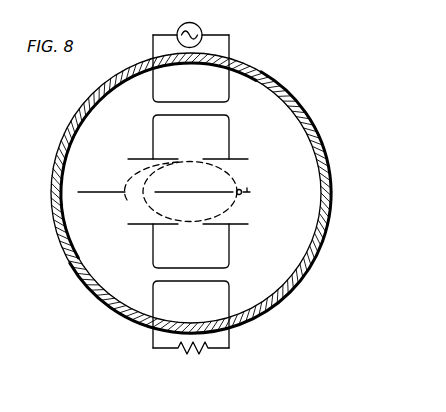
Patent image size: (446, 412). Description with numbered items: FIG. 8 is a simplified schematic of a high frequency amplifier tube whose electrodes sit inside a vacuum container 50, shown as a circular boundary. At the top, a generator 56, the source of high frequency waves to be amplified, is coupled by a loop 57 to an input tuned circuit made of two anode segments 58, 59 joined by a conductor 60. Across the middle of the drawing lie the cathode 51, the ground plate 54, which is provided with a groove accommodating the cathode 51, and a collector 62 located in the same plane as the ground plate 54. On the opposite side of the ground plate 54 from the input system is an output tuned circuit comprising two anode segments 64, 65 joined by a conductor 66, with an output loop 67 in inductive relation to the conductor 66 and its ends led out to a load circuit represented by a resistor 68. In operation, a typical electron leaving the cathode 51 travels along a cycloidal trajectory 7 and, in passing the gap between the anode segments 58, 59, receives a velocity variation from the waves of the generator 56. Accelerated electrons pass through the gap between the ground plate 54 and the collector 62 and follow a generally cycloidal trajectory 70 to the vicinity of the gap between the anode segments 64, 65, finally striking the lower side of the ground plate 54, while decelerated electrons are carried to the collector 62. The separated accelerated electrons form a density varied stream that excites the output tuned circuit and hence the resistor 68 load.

The vacuum container 50 is at (271, 79).
The generator 56 is at (194, 23).
The loop 57 is at (153, 93).
The conductor 60 is at (231, 129).
The anode segment 58 is at (240, 159).
The anode segment 59 is at (138, 159).
The collector 62 is at (95, 192).
The cycloidal trajectory 7 is at (206, 163).
The cathode 51 is at (241, 189).
The ground plate 54 is at (246, 194).
The cycloidal trajectory 70 is at (145, 204).
The anode segment 65 is at (138, 224).
The anode segment 64 is at (241, 225).
The conductor 66 is at (153, 248).
The output loop 67 is at (213, 314).
The resistor 68 is at (193, 352).